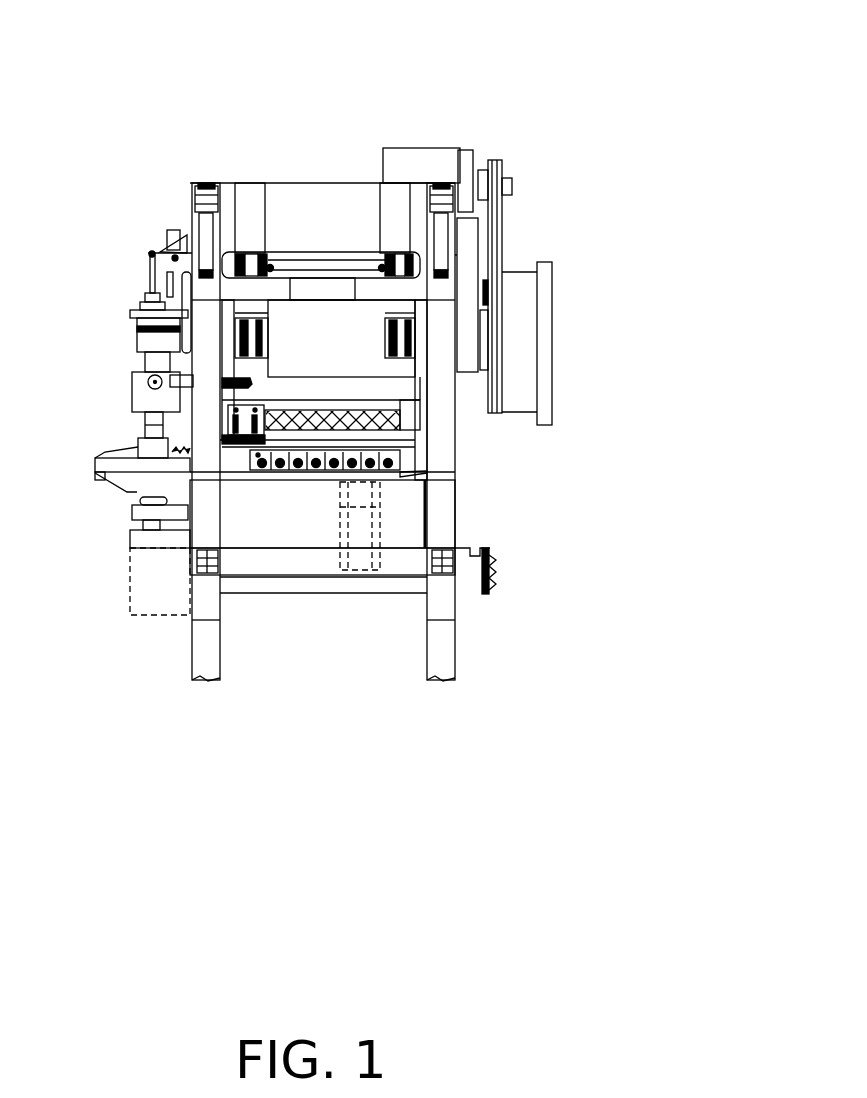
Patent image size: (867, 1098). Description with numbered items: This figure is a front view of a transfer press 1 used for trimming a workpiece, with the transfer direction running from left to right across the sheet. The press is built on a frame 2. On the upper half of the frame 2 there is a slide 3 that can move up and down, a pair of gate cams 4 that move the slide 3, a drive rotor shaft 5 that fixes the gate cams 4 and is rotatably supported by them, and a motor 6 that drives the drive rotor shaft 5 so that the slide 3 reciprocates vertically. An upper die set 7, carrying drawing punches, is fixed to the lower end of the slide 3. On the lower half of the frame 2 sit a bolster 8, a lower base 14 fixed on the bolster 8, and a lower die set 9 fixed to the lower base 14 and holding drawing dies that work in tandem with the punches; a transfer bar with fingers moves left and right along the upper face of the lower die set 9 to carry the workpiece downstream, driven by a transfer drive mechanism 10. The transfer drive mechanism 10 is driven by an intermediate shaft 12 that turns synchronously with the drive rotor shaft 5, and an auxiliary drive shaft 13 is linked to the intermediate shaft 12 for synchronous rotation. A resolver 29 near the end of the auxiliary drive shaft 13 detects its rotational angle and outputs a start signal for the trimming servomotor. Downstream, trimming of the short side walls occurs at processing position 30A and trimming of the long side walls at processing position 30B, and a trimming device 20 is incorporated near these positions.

The transfer press 1 is at (509, 78).
The frame 2 is at (437, 515).
The slide 3 is at (336, 389).
The gate cams 4 is at (256, 313).
The drive rotor shaft 5 is at (284, 288).
The motor 6 is at (413, 158).
The upper die set 7 is at (294, 406).
The bolster 8 is at (410, 538).
The lower die set 9 is at (267, 468).
The transfer drive mechanism 10 is at (131, 438).
The intermediate shaft 12 is at (137, 365).
The auxiliary drive shaft 13 is at (315, 582).
The lower base 14 is at (233, 470).
The trimming device 20 is at (387, 558).
The resolver 29 is at (487, 570).
The processing position 30A is at (337, 472).
The processing position 30B is at (427, 473).